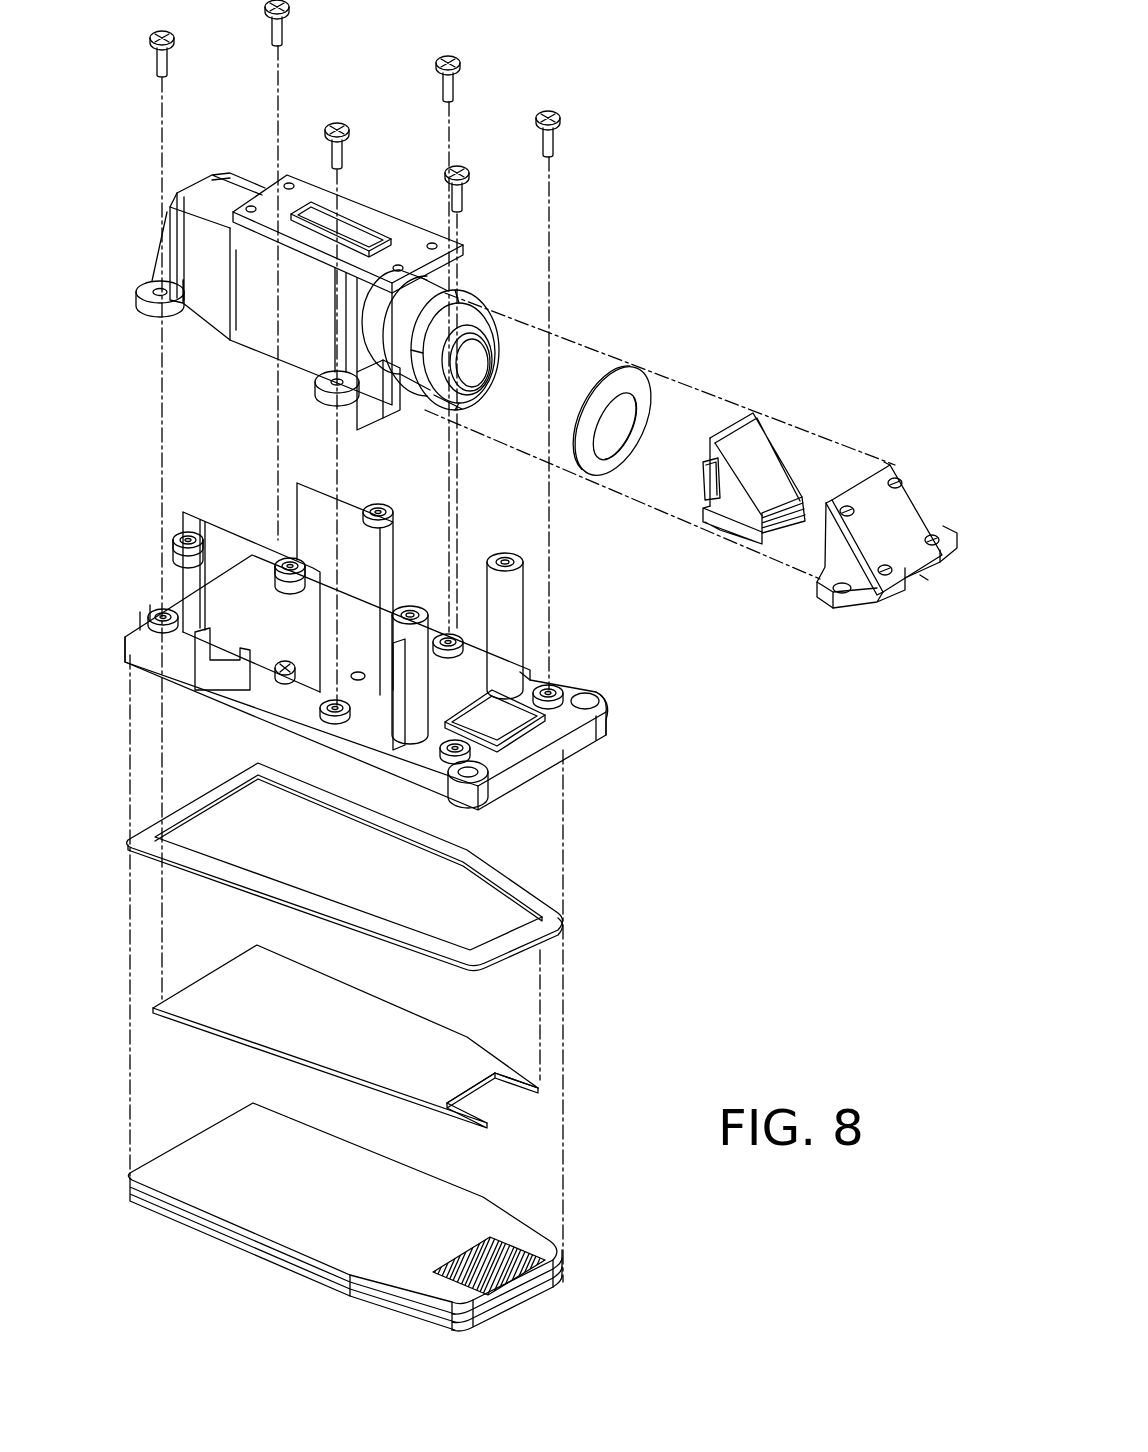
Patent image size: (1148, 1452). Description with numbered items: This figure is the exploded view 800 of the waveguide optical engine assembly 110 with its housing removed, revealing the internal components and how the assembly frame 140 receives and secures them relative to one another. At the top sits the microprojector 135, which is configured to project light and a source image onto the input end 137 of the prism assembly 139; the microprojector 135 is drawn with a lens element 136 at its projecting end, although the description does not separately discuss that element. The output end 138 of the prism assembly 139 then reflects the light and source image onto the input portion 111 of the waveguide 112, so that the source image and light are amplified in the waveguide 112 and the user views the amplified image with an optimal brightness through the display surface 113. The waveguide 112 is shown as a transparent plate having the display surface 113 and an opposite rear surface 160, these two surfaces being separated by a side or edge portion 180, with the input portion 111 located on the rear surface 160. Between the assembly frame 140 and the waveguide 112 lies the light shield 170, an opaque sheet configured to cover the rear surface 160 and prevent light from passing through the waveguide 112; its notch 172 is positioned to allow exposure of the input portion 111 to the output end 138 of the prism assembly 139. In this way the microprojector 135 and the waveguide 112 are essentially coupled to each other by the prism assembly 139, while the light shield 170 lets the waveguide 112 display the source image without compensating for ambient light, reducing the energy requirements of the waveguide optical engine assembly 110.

The exploded view 800 is at (808, 84).
The waveguide optical engine assembly 110 is at (102, 15).
The microprojector 135 is at (268, 330).
The lens 136 is at (476, 352).
The input end 137 is at (706, 410).
The output end 138 is at (740, 574).
The prism assembly 139 is at (961, 476).
The assembly frame 140 is at (570, 666).
The light shield 170 is at (425, 1038).
The notch 172 is at (515, 1104).
The rear surface 160 is at (403, 1223).
The input portion 111 is at (525, 1248).
The waveguide 112 is at (585, 1287).
The display surface 113 is at (262, 1268).
The side or edge portion 180 is at (512, 1305).